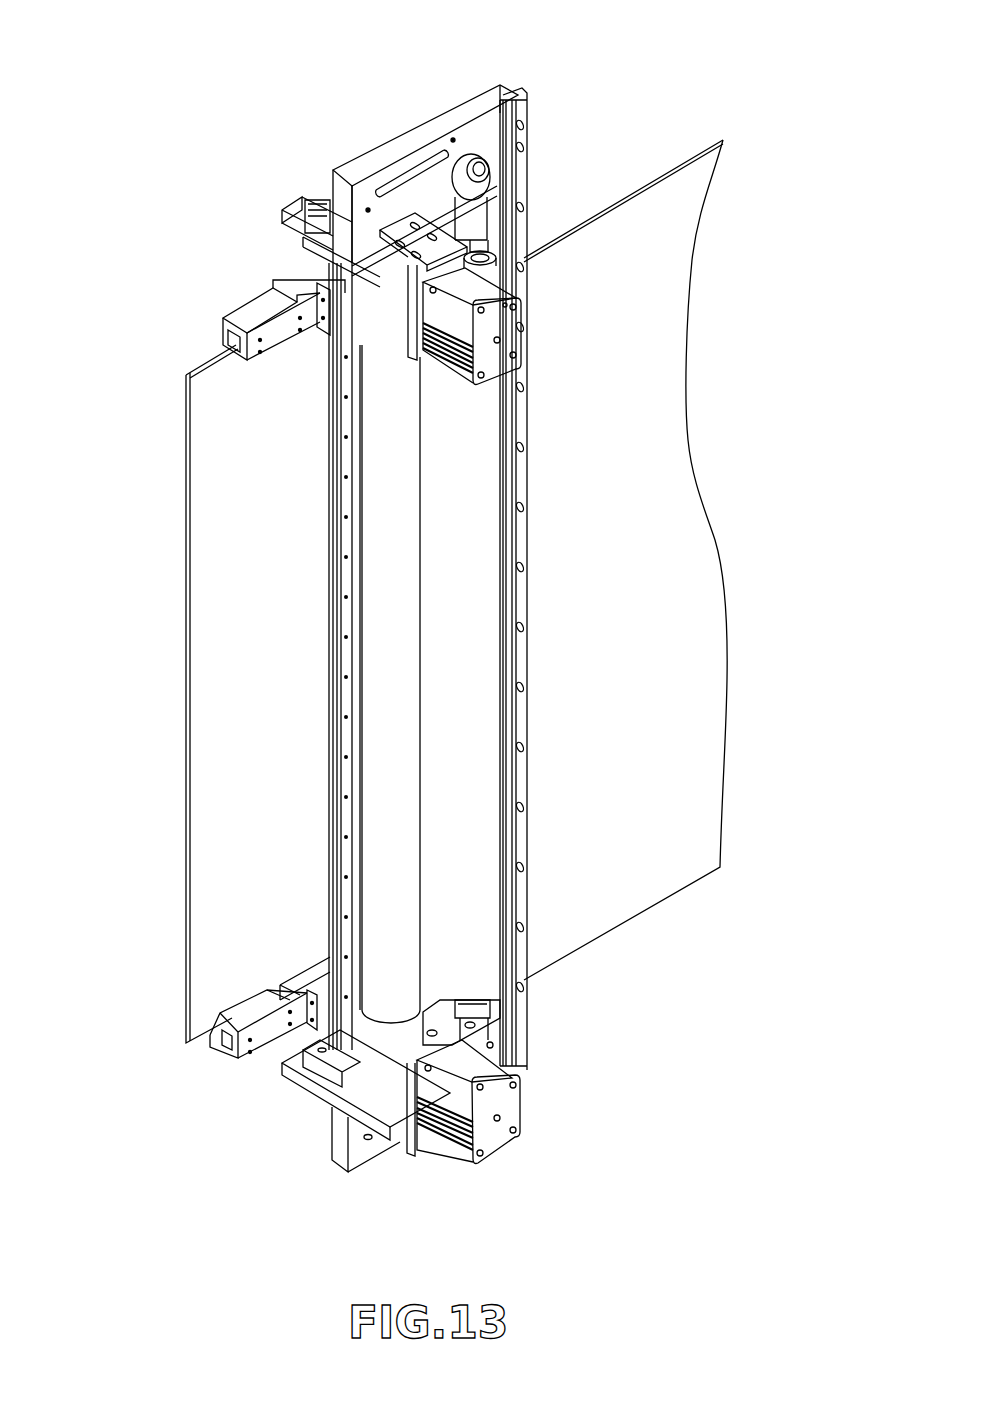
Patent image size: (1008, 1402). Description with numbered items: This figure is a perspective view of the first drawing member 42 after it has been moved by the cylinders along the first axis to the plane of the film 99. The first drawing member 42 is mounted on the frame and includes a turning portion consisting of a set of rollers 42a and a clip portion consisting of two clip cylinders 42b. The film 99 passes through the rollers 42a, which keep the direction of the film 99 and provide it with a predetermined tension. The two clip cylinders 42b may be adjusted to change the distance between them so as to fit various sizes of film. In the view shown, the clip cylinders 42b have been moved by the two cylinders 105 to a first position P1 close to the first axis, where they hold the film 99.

The first drawing member 42 is at (737, 332).
The rollers 42a is at (378, 343).
The clip cylinders 42b is at (272, 308).
The cylinders 105 is at (510, 340).
The film 99 is at (213, 752).
The first position P1 is at (200, 337).